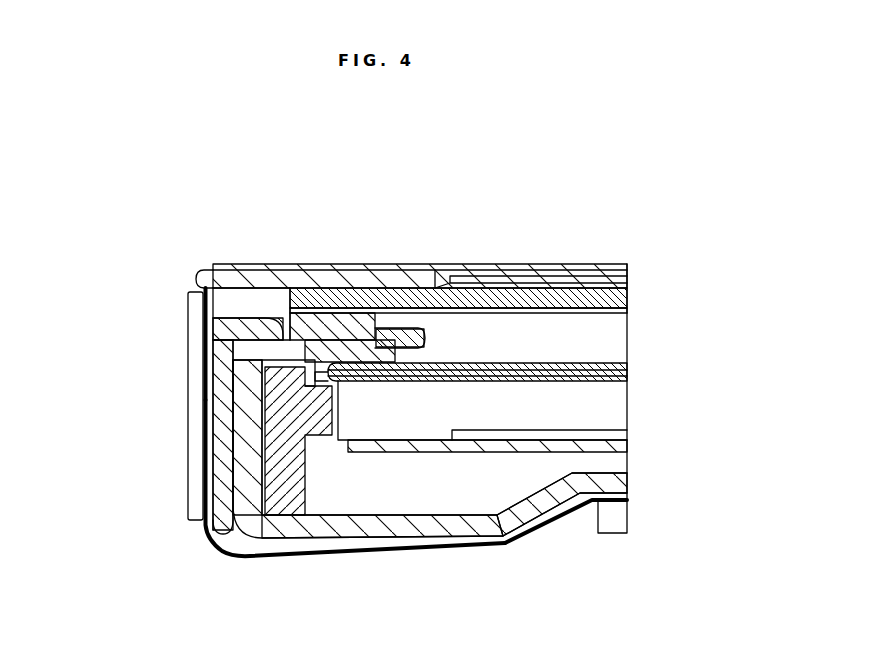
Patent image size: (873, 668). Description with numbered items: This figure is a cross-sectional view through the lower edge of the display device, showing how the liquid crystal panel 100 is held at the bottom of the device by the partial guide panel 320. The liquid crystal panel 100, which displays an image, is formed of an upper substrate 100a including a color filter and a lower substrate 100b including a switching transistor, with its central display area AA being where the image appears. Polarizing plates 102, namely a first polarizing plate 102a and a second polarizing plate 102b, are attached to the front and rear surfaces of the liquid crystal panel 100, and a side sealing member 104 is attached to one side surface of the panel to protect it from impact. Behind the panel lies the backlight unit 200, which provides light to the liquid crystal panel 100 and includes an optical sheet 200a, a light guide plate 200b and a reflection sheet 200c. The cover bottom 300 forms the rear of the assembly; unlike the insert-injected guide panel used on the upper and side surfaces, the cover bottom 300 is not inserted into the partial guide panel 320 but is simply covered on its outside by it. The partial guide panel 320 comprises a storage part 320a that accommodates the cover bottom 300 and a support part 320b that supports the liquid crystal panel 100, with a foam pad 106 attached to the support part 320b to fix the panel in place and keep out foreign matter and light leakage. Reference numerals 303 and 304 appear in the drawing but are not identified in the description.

The liquid crystal panel 100 is at (539, 301).
The upper substrate 100a is at (627, 273).
The display area AA is at (627, 297).
The lower substrate 100b is at (627, 312).
The polarizing plates 102 is at (458, 258).
The first polarizing plate 102a is at (367, 264).
The second polarizing plate 102b is at (435, 288).
The side sealing member 104 is at (205, 276).
The foam pad 106 is at (313, 286).
The backlight unit 200 is at (553, 406).
The optical sheet 200a is at (627, 376).
The light guide plate 200b is at (627, 410).
The reflection sheet 200c is at (627, 445).
The cover bottom 300 is at (494, 522).
The side plate 303 is at (202, 488).
The side block 304 is at (283, 505).
The partial guide panel 320 is at (269, 422).
The storage part 320a is at (205, 337).
The support part 320b is at (207, 420).